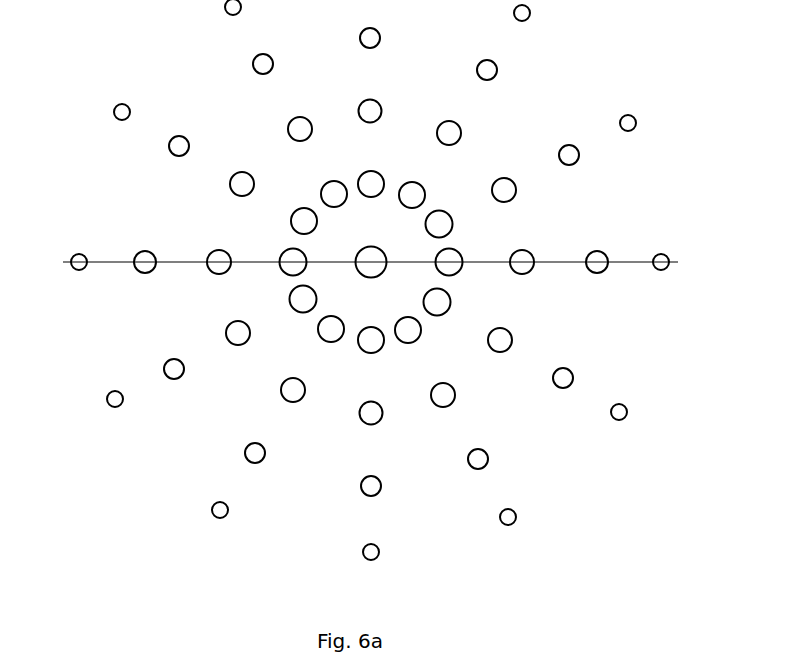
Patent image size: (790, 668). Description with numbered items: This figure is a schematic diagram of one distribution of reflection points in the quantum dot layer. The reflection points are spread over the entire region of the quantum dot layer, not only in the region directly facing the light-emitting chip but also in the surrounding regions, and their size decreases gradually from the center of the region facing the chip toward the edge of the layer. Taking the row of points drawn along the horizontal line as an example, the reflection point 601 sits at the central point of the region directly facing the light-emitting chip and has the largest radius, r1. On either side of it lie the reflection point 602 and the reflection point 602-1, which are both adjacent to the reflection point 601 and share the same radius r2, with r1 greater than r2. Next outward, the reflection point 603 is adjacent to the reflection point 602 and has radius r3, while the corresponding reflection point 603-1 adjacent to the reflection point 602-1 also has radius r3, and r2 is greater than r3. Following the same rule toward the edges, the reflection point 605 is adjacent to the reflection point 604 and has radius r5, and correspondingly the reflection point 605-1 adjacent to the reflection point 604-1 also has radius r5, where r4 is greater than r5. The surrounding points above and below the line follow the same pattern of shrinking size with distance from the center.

The reflection point 601 is at (378, 247).
The reflection point 602 is at (462, 252).
The reflection point 602-1 is at (285, 250).
The reflection point 603 is at (532, 252).
The reflection point 603-1 is at (215, 252).
The reflection point 604 is at (597, 272).
The reflection point 604-1 is at (141, 273).
The reflection point 605 is at (659, 251).
The reflection point 605-1 is at (83, 253).